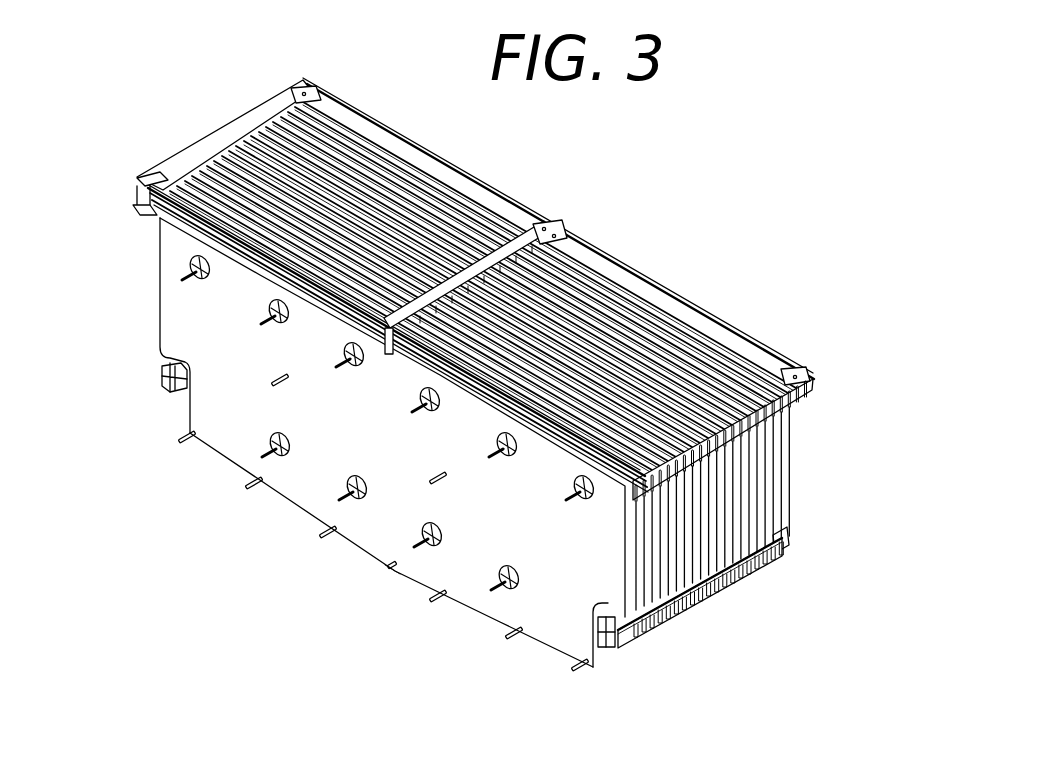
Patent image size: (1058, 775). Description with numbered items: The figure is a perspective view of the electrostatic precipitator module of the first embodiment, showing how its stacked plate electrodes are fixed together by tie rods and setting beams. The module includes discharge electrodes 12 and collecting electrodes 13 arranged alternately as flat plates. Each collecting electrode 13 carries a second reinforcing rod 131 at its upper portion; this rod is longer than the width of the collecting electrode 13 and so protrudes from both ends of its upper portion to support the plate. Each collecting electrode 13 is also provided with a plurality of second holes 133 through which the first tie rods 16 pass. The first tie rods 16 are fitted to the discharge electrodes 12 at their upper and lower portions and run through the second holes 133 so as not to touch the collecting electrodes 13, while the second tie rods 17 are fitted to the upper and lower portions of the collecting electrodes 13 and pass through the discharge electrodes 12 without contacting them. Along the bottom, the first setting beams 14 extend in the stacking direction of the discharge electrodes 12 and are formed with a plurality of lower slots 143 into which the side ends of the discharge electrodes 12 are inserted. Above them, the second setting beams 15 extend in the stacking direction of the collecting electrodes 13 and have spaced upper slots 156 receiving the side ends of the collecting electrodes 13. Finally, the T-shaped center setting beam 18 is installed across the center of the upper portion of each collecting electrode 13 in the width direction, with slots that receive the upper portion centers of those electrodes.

The discharge electrode 12 is at (600, 650).
The collecting electrode 13 is at (376, 542).
The second reinforcing rod 131 is at (182, 223).
The second hole 133 is at (425, 546).
The first setting beam 14 is at (163, 375).
The lower slot 143 is at (766, 574).
The second setting beam 15 is at (232, 136).
The upper slot 156 is at (802, 405).
The first tie rod 16 is at (262, 316).
The second tie rod 17 is at (272, 382).
The center setting beam 18 is at (507, 258).